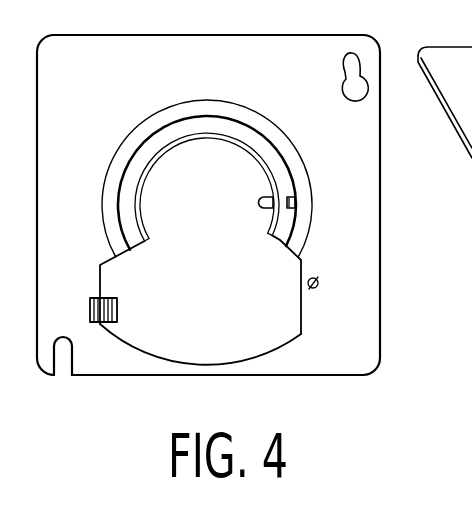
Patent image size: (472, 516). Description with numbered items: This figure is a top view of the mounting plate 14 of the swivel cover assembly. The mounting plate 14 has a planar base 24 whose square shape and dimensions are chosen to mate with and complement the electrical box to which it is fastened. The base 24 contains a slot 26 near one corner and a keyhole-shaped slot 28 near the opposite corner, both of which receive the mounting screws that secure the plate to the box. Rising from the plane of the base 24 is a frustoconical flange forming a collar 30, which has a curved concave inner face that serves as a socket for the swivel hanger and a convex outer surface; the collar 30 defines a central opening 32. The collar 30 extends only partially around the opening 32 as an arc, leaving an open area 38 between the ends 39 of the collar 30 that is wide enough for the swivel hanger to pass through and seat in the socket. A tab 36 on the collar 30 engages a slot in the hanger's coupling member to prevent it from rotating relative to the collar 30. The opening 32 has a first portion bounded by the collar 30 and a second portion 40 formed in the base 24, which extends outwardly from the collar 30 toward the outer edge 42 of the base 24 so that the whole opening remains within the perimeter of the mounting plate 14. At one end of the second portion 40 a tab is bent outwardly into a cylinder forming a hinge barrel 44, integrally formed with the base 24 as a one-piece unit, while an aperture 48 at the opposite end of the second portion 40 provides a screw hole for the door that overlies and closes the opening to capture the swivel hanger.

The mounting plate 14 is at (384, 355).
The planar base 24 is at (346, 227).
The slot 26 is at (63, 361).
The keyhole-shaped slot 28 is at (348, 55).
The collar 30 is at (212, 134).
The central opening 32 is at (252, 181).
The tab 36 is at (262, 206).
The open area 38 is at (213, 268).
The ends of the collar 39 is at (144, 242).
The second portion of the opening 40 is at (256, 341).
The outer edge 42 is at (344, 377).
The hinge barrel 44 is at (117, 310).
The aperture 48 is at (319, 281).